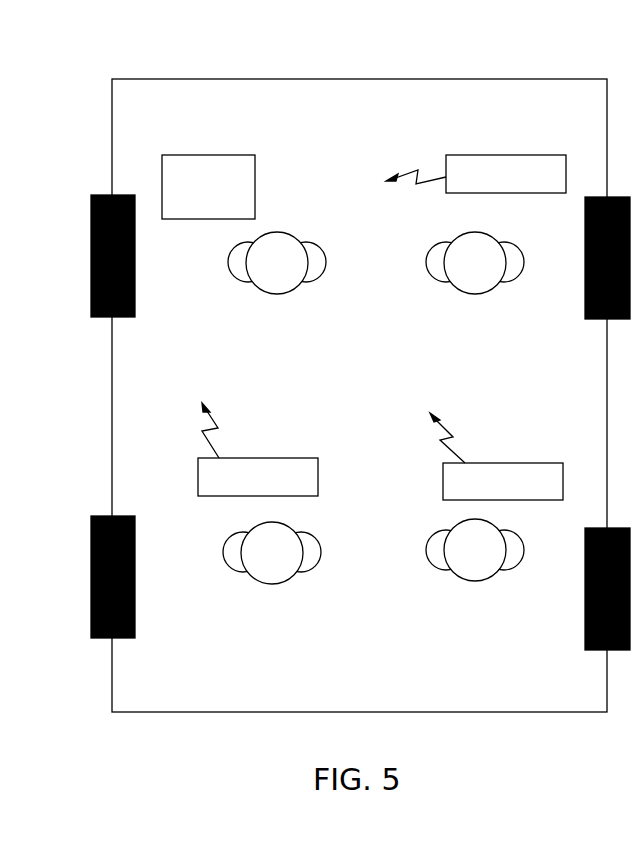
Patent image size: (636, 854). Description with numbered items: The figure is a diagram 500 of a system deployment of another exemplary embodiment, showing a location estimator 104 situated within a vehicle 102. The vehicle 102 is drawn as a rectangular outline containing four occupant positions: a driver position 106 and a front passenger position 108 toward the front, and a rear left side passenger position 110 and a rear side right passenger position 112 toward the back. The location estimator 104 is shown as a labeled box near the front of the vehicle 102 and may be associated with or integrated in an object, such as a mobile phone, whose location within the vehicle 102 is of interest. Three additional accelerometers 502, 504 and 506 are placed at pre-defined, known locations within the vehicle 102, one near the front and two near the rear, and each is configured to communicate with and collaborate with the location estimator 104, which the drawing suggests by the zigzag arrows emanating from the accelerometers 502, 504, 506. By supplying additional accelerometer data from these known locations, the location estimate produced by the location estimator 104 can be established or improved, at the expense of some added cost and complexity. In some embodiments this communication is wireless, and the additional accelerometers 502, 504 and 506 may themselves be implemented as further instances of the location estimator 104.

The diagram 500 is at (387, 12).
The vehicle 102 is at (112, 128).
The location estimator 104 is at (255, 172).
The driver position 106 is at (258, 290).
The front passenger position 108 is at (468, 295).
The rear left side passenger position 110 is at (262, 585).
The rear side right passenger position 112 is at (462, 582).
The accelerometer 502 is at (485, 155).
The accelerometer 504 is at (238, 458).
The accelerometer 506 is at (483, 463).